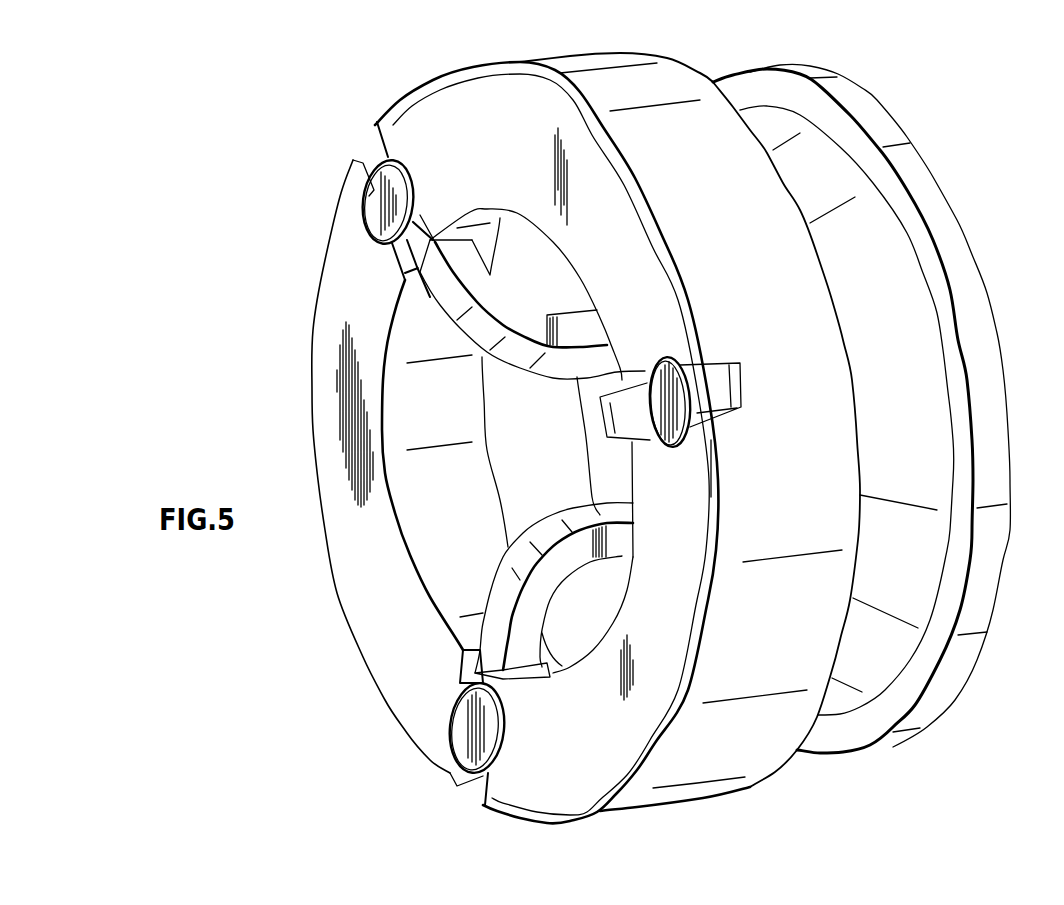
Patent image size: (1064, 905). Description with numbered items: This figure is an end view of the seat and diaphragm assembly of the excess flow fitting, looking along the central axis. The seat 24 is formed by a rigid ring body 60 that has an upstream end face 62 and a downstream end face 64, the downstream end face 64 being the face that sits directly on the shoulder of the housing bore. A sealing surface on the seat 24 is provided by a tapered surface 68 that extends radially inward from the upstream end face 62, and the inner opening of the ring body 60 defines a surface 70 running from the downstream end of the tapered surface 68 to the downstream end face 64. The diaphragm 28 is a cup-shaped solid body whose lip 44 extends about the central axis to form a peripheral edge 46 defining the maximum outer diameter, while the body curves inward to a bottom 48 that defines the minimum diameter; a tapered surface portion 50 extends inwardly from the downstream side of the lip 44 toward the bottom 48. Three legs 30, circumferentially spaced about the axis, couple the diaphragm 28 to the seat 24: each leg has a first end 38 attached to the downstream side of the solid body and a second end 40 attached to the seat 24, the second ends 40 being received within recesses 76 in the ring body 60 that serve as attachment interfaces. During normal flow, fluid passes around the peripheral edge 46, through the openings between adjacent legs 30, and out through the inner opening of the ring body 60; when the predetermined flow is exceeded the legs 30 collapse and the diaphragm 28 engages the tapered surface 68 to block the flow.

The seat 24 is at (583, 77).
The diaphragm 28 is at (917, 153).
The legs 30 is at (503, 358).
The first end 38 is at (593, 320).
The second end 40 is at (383, 199).
The lip 44 is at (980, 328).
The peripheral edge 46 is at (768, 69).
The bottom 48 is at (585, 412).
The tapered surface portion 50 is at (863, 653).
The rigid ring body 60 is at (702, 773).
The upstream end face 62 is at (497, 263).
The downstream end face 64 is at (383, 660).
The tapered surface 68 is at (483, 510).
The surface 70 is at (423, 527).
The recesses 76 is at (370, 160).